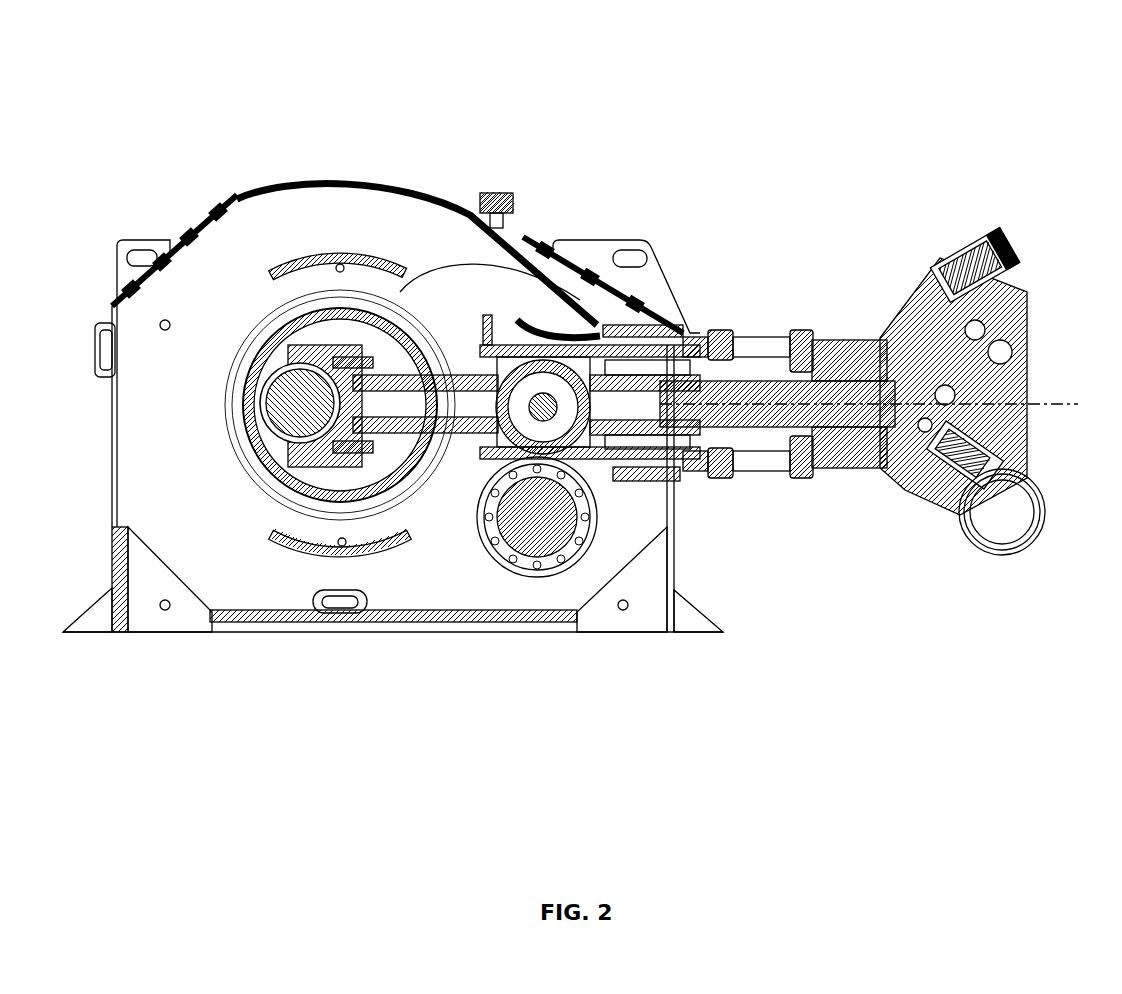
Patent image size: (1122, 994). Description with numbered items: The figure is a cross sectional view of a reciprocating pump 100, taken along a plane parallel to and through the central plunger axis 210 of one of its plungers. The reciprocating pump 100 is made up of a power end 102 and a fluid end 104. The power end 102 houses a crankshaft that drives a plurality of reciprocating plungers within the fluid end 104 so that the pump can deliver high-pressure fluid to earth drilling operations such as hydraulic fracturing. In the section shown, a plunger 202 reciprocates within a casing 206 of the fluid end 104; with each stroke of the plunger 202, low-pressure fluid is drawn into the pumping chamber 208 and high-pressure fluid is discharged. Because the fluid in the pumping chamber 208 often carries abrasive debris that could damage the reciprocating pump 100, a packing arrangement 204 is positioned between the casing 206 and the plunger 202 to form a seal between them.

The reciprocating pump 100 is at (1010, 80).
The power end 102 is at (272, 219).
The fluid end 104 is at (1000, 555).
The plunger 202 is at (808, 408).
The packing arrangement 204 is at (788, 372).
The casing 206 is at (932, 277).
The pumping chamber 208 is at (908, 402).
The plunger axis 210 is at (1037, 405).